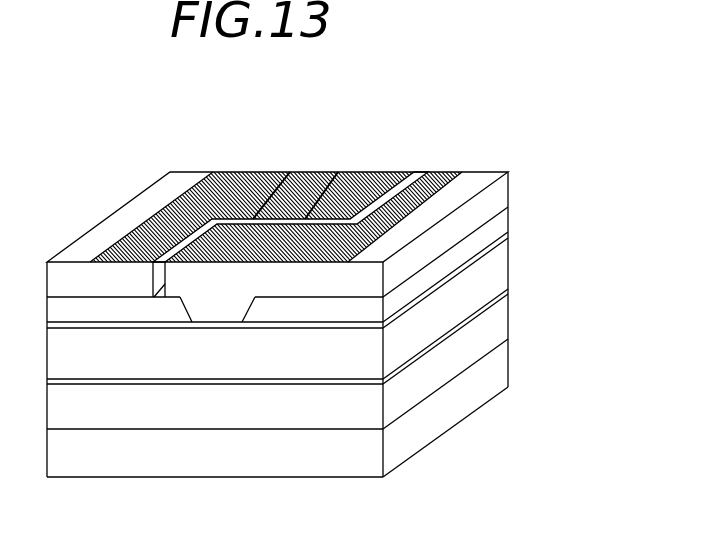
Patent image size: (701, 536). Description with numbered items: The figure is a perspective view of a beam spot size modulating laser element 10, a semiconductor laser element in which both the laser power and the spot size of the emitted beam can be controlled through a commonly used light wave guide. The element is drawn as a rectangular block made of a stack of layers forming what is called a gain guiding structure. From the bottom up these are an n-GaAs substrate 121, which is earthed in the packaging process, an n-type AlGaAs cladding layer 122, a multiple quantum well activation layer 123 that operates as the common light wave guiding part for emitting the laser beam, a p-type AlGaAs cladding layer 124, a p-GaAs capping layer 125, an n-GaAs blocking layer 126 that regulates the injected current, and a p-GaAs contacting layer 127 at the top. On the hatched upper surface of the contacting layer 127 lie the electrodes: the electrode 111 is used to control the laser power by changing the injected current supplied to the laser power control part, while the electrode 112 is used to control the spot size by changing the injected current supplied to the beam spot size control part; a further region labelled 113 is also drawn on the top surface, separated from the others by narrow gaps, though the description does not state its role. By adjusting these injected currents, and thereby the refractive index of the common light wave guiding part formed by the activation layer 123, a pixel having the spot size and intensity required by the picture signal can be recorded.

The beam spot size modulating laser element 10 is at (463, 429).
The electrode for controlling the laser power 111 is at (255, 172).
The electrode for controlling the spot size 112 is at (418, 172).
The third electrode region 113 is at (332, 172).
The n-GaAs substrate 121 is at (508, 363).
The n-AlGaAs cladding layer 122 is at (508, 323).
The multiple quantum well activation layer 123 is at (512, 285).
The p-AlGaAs cladding layer 124 is at (512, 273).
The p-GaAs capping layer 125 is at (512, 230).
The n-GaAs blocking layer 126 is at (512, 215).
The p-GaAs contacting layer 127 is at (513, 183).